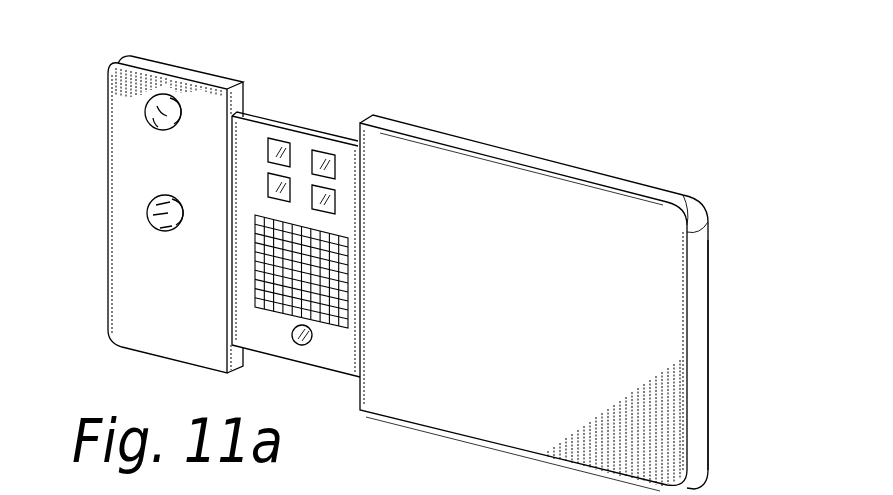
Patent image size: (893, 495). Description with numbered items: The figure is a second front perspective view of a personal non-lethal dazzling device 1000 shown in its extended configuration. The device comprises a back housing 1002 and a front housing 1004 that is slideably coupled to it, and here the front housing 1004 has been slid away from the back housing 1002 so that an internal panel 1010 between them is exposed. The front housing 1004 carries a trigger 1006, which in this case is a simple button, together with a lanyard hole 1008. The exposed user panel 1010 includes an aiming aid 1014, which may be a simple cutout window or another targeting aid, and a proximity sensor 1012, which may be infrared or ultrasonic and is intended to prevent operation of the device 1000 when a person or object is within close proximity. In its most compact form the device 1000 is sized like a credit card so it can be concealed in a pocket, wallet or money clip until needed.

The personal non-lethal dazzling device 1000 is at (539, 147).
The back housing 1002 is at (710, 297).
The front housing 1004 is at (108, 170).
The trigger 1006 is at (160, 96).
The lanyard hole 1008 is at (160, 236).
The internal panel 1010 is at (342, 373).
The proximity sensor 1012 is at (301, 346).
The aiming aid 1014 is at (270, 140).